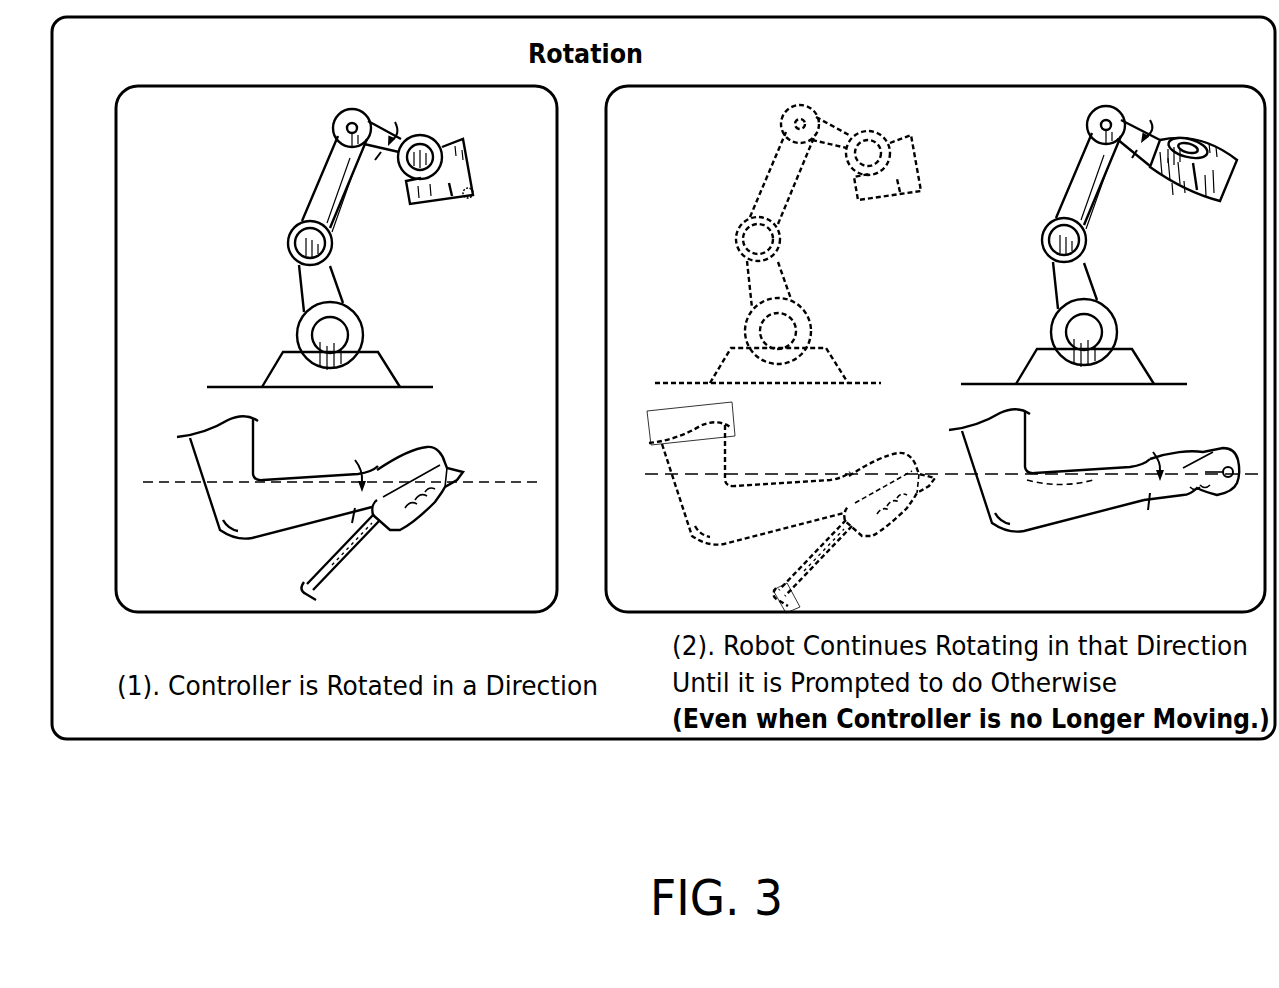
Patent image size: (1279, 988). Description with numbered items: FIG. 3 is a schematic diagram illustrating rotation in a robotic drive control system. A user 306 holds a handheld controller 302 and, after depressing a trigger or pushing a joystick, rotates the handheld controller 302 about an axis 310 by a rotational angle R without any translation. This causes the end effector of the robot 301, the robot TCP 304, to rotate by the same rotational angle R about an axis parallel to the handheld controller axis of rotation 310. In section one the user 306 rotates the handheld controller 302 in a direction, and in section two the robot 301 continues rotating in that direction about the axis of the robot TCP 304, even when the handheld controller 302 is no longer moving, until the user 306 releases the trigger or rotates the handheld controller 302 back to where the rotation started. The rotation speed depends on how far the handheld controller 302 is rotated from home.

The robot 301 is at (318, 120).
The handheld controller 302 is at (400, 523).
The robot TCP 304 is at (468, 200).
The user 306 is at (200, 508).
The axis 310 is at (182, 480).